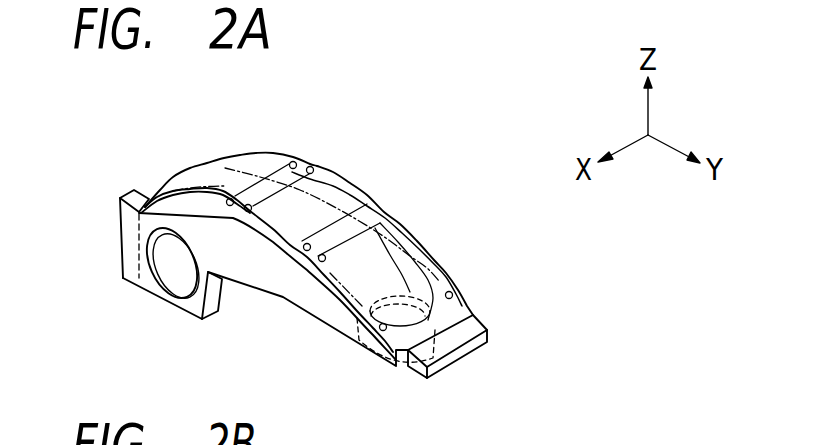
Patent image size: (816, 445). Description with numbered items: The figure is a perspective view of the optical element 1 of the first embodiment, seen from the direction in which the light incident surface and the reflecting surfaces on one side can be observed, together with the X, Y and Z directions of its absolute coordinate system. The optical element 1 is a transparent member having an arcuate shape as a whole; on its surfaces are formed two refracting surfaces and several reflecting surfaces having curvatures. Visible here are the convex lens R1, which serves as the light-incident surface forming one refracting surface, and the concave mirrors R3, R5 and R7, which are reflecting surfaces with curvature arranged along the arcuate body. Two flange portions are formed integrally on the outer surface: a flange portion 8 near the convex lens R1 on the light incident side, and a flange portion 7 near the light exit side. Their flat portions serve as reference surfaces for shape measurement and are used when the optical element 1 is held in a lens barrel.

The optical element 1 is at (267, 272).
The flange portion 7 is at (486, 354).
The flange portion 8 is at (107, 220).
The convex lens R1 is at (168, 272).
The concave mirror R3 is at (208, 172).
The concave mirror R5 is at (333, 187).
The concave mirror R7 is at (407, 253).